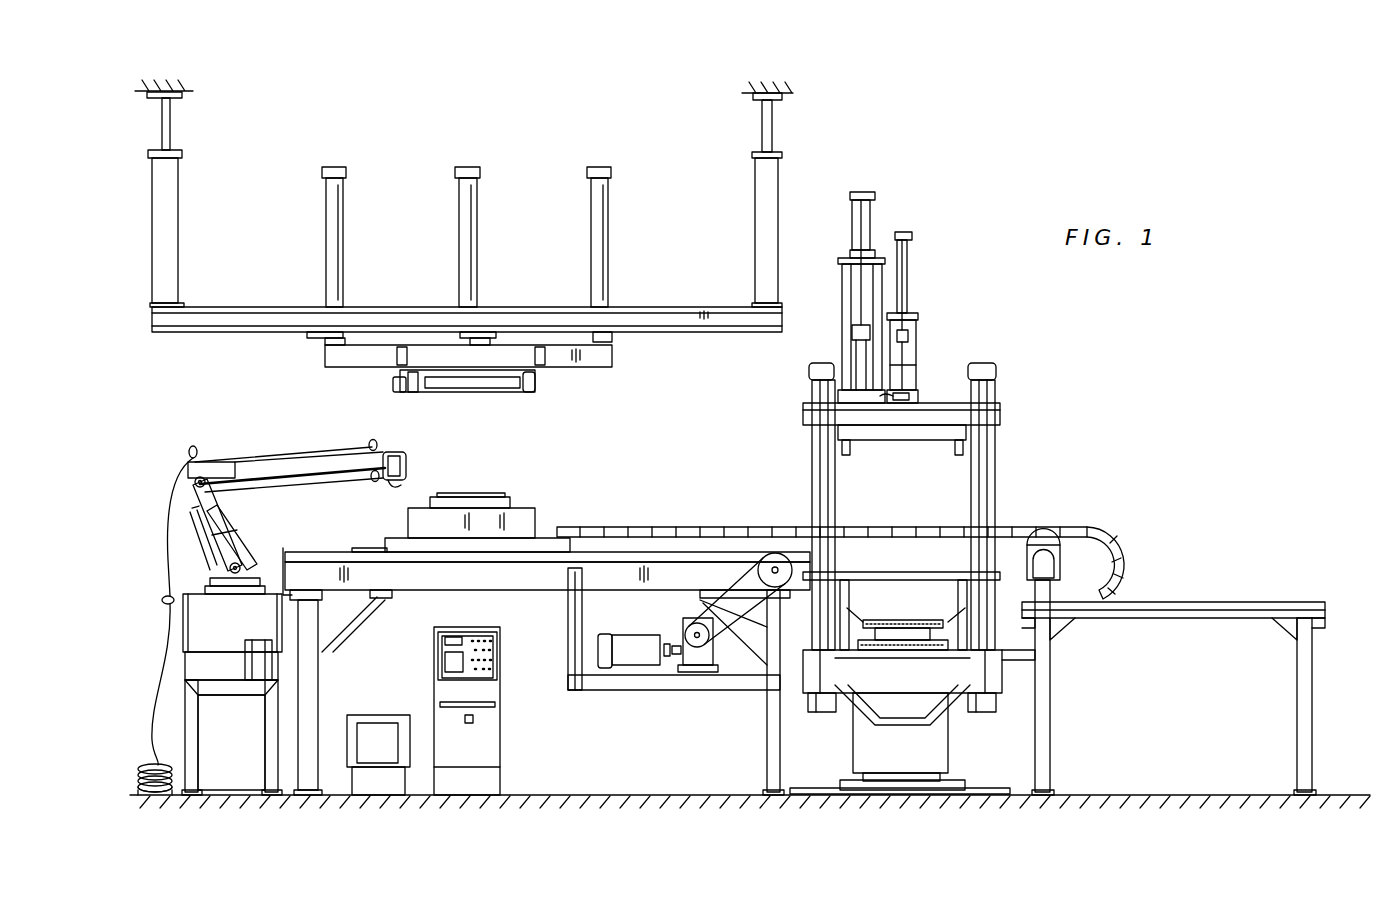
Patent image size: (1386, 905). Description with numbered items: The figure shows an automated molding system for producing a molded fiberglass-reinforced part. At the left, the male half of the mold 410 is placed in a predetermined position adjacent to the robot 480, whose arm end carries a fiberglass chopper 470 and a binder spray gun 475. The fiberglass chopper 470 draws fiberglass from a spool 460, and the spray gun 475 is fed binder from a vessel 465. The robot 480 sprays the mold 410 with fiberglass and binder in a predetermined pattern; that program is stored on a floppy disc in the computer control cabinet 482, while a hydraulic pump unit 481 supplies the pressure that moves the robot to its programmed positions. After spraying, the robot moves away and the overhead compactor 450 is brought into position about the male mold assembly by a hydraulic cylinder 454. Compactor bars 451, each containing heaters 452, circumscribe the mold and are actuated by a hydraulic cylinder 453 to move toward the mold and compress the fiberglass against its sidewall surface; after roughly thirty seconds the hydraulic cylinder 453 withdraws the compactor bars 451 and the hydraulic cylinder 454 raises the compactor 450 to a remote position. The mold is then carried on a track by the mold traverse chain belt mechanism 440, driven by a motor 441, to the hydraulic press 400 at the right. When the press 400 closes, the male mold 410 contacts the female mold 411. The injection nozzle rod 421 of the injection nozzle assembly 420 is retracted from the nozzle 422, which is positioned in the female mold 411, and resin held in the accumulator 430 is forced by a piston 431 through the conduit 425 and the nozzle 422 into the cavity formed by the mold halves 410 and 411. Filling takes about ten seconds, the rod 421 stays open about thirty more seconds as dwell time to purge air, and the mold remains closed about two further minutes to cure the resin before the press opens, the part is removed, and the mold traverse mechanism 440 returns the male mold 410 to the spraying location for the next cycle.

The hydraulic press 400 is at (928, 695).
The male half of the mold 410 is at (530, 508).
The female mold 411 is at (943, 430).
The injection nozzle assembly 420 is at (930, 326).
The injection nozzle rod 421 is at (908, 345).
The nozzle 422 is at (912, 397).
The conduit 425 is at (890, 410).
The accumulator 430 is at (848, 350).
The piston 431 is at (852, 333).
The mold traverse chain belt mechanism 440 is at (628, 532).
The motor 441 is at (637, 657).
The compactor 450 is at (545, 403).
The compactor bars 451 is at (470, 399).
The heaters 452 is at (430, 390).
The hydraulic cylinder 453 is at (393, 385).
The hydraulic cylinder 454 is at (335, 247).
The spool 460 is at (138, 778).
The vessel 465 is at (258, 672).
The fiberglass chopper 470 is at (405, 458).
The binder spray gun 475 is at (408, 470).
The robot 480 is at (195, 625).
The hydraulic pump unit 481 is at (383, 780).
The computer control cabinet 482 is at (492, 730).